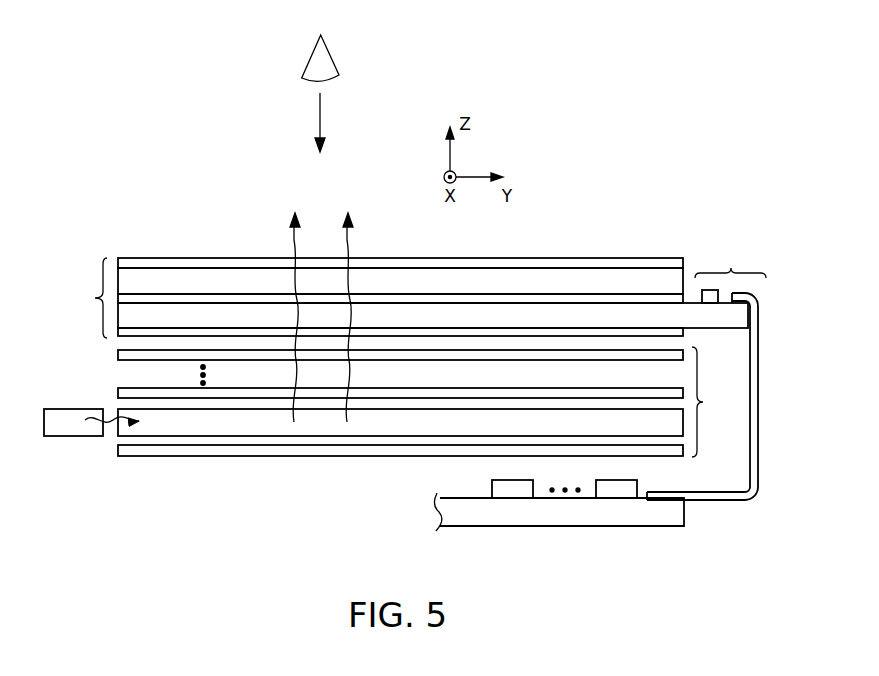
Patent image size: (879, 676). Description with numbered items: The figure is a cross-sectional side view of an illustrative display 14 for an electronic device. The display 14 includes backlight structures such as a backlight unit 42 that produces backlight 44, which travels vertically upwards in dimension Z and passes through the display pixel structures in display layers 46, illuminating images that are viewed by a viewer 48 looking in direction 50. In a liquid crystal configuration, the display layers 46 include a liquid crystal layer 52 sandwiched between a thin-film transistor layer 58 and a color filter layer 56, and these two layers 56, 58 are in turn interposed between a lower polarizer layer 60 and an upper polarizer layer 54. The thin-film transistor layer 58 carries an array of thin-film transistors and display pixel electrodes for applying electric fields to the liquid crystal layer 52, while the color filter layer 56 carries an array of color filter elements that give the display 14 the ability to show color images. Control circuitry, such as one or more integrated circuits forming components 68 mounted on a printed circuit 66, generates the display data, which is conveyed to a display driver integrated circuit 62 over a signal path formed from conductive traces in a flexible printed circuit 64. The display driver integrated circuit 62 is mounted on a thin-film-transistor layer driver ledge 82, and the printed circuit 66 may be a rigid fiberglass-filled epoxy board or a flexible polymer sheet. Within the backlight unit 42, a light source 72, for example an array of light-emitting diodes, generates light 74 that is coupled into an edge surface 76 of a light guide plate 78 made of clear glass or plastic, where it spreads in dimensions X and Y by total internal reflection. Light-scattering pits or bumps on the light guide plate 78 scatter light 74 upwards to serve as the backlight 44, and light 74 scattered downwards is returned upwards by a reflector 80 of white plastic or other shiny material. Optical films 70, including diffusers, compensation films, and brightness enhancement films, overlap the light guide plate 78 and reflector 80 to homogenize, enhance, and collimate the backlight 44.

The display 14 is at (700, 110).
The backlight unit 42 is at (398, 429).
The backlight 44 is at (296, 245).
The display layers 46 is at (405, 290).
The viewer 48 is at (331, 55).
The direction 50 is at (321, 122).
The liquid crystal layer 52 is at (227, 297).
The upper polarizer layer 54 is at (210, 269).
The color filter layer 56 is at (138, 276).
The thin-film transistor layer 58 is at (168, 308).
The lower polarizer layer 60 is at (130, 333).
The display driver integrated circuit 62 is at (717, 299).
The flexible printed circuit 64 is at (758, 340).
The printed circuit 66 is at (565, 522).
The components 68 is at (530, 480).
The optical films 70 is at (128, 362).
The light source 72 is at (62, 436).
The light 74 is at (112, 424).
The edge surface 76 is at (118, 425).
The light guide plate 78 is at (203, 423).
The reflector 80 is at (273, 458).
The thin-film-transistor layer driver ledge 82 is at (730, 373).